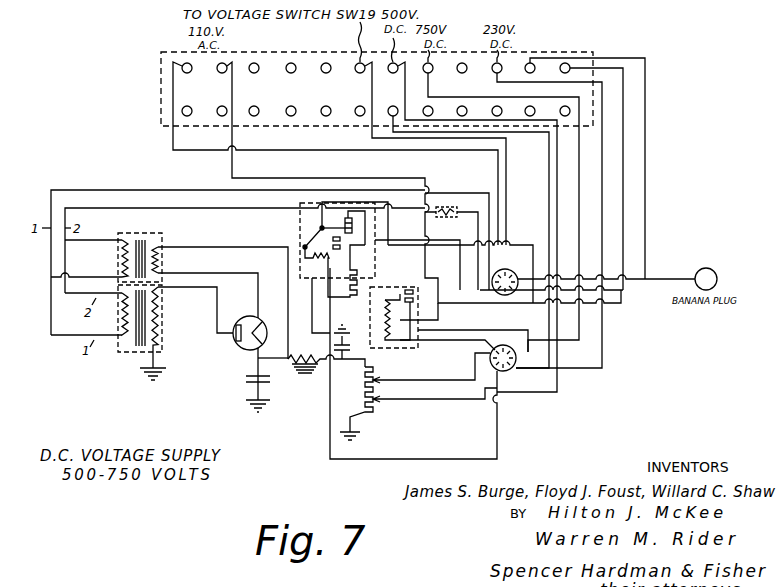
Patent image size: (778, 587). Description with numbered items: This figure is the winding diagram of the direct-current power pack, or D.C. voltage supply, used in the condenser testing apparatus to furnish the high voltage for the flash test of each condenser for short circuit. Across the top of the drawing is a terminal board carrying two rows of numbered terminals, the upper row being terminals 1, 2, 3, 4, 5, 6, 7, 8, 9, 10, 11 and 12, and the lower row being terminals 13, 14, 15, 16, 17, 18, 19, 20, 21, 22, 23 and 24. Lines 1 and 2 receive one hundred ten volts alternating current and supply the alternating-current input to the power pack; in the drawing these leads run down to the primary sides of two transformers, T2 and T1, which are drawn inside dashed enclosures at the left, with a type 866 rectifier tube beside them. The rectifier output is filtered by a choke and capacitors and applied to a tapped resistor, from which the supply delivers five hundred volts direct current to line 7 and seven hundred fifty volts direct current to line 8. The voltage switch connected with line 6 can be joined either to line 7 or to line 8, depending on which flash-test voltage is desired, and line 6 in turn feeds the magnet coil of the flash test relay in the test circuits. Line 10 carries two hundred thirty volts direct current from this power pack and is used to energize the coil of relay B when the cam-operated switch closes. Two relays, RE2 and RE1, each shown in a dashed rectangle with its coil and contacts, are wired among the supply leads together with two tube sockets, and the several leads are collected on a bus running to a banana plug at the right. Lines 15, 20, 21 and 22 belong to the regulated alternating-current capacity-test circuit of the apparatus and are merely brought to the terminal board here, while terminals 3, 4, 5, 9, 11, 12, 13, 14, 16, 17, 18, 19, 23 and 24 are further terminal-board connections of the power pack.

The line 1 is at (335, 149).
The line 2 is at (492, 292).
The terminal 3 is at (249, 63).
The terminal 4 is at (286, 63).
The terminal 5 is at (321, 63).
The line 6 is at (549, 310).
The line 7 is at (527, 408).
The line 8 is at (583, 210).
The terminal 9 is at (457, 63).
The line 10 is at (540, 210).
The terminal 11 is at (578, 166).
The terminal 12 is at (585, 171).
The terminal 13 is at (180, 106).
The terminal 14 is at (215, 106).
The line 15 is at (247, 106).
The terminal 16 is at (284, 106).
The terminal 17 is at (319, 106).
The terminal 18 is at (353, 106).
The terminal 19 is at (462, 232).
The line 20 is at (421, 106).
The line 21 is at (455, 106).
The line 22 is at (490, 106).
The terminal 23 is at (523, 106).
The terminal 24 is at (558, 106).
The transformer T1 is at (163, 318).
The transformer T2 is at (163, 258).
The relay RE1 is at (384, 317).
The relay RE2 is at (312, 229).
The type 866 rectifier tube 866 is at (238, 347).